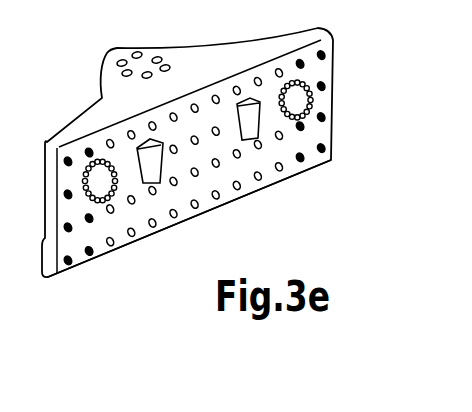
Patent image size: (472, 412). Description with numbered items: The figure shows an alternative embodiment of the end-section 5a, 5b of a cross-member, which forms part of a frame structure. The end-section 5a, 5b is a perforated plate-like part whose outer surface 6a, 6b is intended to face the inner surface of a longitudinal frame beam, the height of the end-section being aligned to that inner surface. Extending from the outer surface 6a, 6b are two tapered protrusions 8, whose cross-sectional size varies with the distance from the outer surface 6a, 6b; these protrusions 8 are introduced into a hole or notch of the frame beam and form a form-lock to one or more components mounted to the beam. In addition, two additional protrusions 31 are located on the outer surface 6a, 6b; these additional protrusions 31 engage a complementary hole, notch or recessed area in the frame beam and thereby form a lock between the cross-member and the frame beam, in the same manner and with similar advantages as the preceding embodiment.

The end-section 5a is at (173, 93).
The end-section 5b is at (105, 108).
The outer surface 6a is at (189, 237).
The outer surface 6b is at (107, 252).
The additional protrusion 31 is at (105, 182).
The protrusion 8 is at (152, 173).